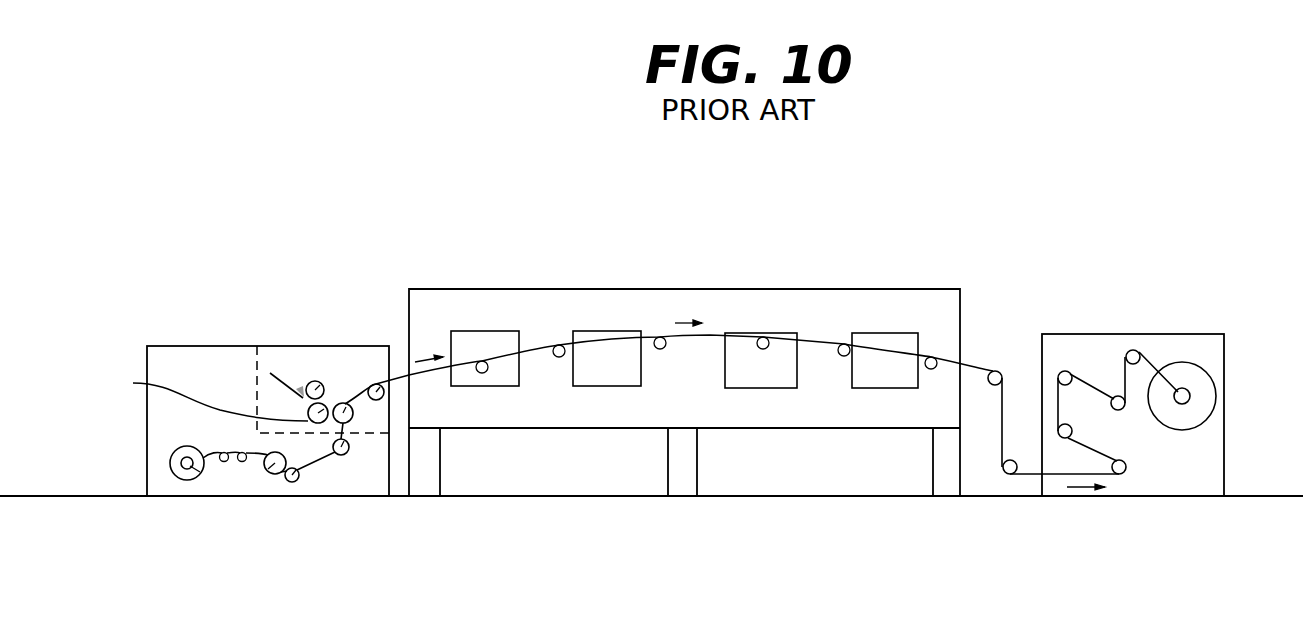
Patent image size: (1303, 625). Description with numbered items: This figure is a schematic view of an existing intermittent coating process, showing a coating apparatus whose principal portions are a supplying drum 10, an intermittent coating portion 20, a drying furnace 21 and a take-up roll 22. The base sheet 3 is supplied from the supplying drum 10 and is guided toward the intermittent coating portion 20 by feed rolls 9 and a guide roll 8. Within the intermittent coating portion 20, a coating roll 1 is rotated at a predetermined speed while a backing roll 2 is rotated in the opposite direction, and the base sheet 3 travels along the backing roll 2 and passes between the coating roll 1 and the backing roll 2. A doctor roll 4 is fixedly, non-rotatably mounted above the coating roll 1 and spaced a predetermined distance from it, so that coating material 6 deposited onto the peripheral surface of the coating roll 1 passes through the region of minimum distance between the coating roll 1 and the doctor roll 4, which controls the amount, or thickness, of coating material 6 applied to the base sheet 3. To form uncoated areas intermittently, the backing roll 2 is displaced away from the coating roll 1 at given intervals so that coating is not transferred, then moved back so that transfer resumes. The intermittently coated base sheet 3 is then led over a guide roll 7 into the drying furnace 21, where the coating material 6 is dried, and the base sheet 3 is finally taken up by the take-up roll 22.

The coating roll 1 is at (133, 383).
The backing roll 2 is at (345, 404).
The base sheet 3 is at (537, 345).
The doctor roll 4 is at (318, 380).
The coating material 6 is at (300, 388).
The guide roll 7 is at (377, 383).
The guide roll 8 is at (338, 455).
The feed rolls 9 is at (287, 483).
The supplying drum 10 is at (170, 462).
The intermittent coating portion 20 is at (320, 342).
The drying furnace 21 is at (508, 288).
The take-up roll 22 is at (1203, 402).